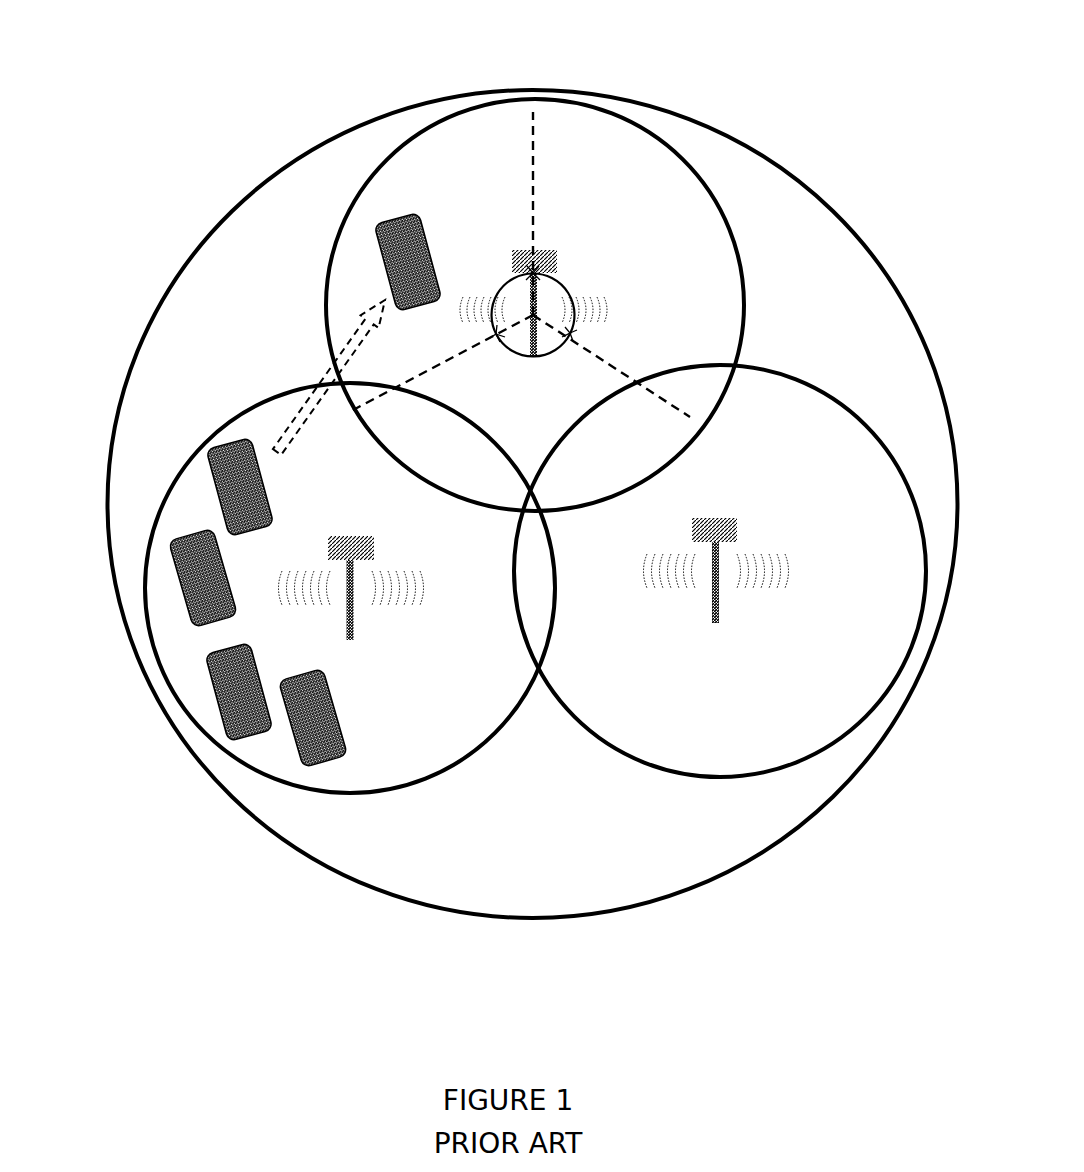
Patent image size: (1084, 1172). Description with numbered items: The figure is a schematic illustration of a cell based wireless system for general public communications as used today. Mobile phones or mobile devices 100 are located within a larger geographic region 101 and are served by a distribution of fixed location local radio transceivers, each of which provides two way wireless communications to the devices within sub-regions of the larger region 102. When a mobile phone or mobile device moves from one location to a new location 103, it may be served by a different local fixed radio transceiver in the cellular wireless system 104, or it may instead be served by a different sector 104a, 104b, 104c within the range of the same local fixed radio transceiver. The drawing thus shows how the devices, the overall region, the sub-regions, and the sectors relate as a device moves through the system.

The mobile devices 100 is at (190, 530).
The larger geographic region 101 is at (282, 813).
The sub-regions of the larger region 102 is at (450, 743).
The new location 103 is at (378, 225).
The cellular wireless system 104 is at (466, 116).
The sector 104a is at (570, 295).
The sector 104b is at (542, 358).
The sector 104c is at (502, 278).